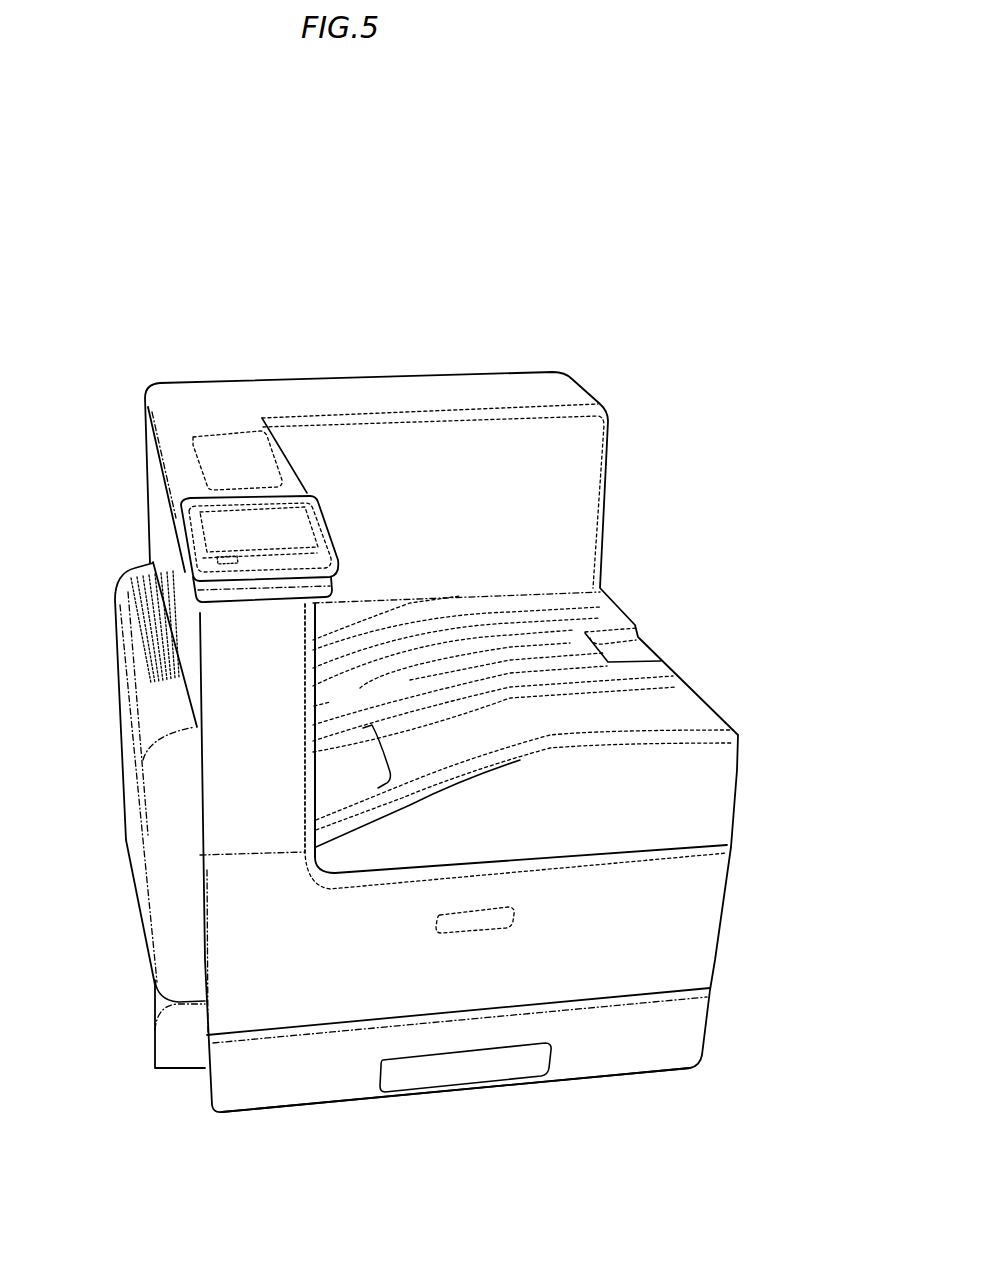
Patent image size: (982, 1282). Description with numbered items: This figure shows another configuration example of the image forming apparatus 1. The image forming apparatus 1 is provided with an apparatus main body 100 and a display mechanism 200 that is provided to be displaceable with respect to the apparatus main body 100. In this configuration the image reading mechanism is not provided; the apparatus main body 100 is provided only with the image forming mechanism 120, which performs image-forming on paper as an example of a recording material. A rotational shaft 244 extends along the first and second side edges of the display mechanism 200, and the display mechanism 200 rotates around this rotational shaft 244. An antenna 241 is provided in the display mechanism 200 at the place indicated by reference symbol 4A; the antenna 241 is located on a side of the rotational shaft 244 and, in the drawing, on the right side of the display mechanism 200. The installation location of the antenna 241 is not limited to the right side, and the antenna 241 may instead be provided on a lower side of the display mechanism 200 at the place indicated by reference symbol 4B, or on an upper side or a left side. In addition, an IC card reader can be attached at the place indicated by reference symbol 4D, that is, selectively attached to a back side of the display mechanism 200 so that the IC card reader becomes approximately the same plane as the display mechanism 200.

The image forming apparatus 1 is at (596, 304).
The apparatus main body 100 is at (608, 466).
The image forming mechanism 120 is at (634, 817).
The display mechanism 200 is at (250, 589).
The antenna 241 is at (333, 500).
The rotational shaft 244 is at (262, 574).
The antenna location on right side of display mechanism 4A is at (317, 518).
The alternative antenna location on lower side of display mechanism 4B is at (226, 542).
The IC card reader attachment location 4D is at (213, 432).